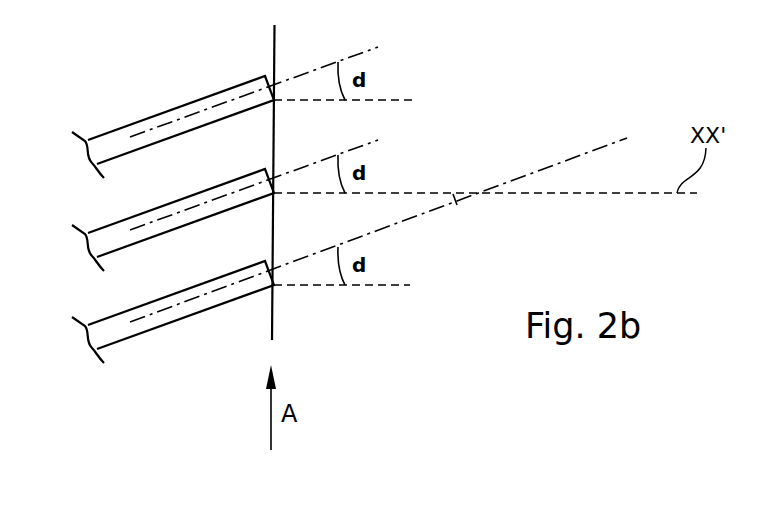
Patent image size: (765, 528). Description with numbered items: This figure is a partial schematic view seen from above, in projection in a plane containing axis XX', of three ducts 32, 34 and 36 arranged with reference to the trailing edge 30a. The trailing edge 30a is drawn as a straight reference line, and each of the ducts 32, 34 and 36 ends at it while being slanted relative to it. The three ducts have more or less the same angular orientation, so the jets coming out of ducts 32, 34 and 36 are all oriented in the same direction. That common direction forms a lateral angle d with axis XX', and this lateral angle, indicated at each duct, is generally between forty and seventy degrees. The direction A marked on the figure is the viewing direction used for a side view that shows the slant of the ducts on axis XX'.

The trailing edge 30a is at (272, 312).
The duct 32 is at (112, 316).
The duct 34 is at (112, 224).
The duct 36 is at (160, 114).